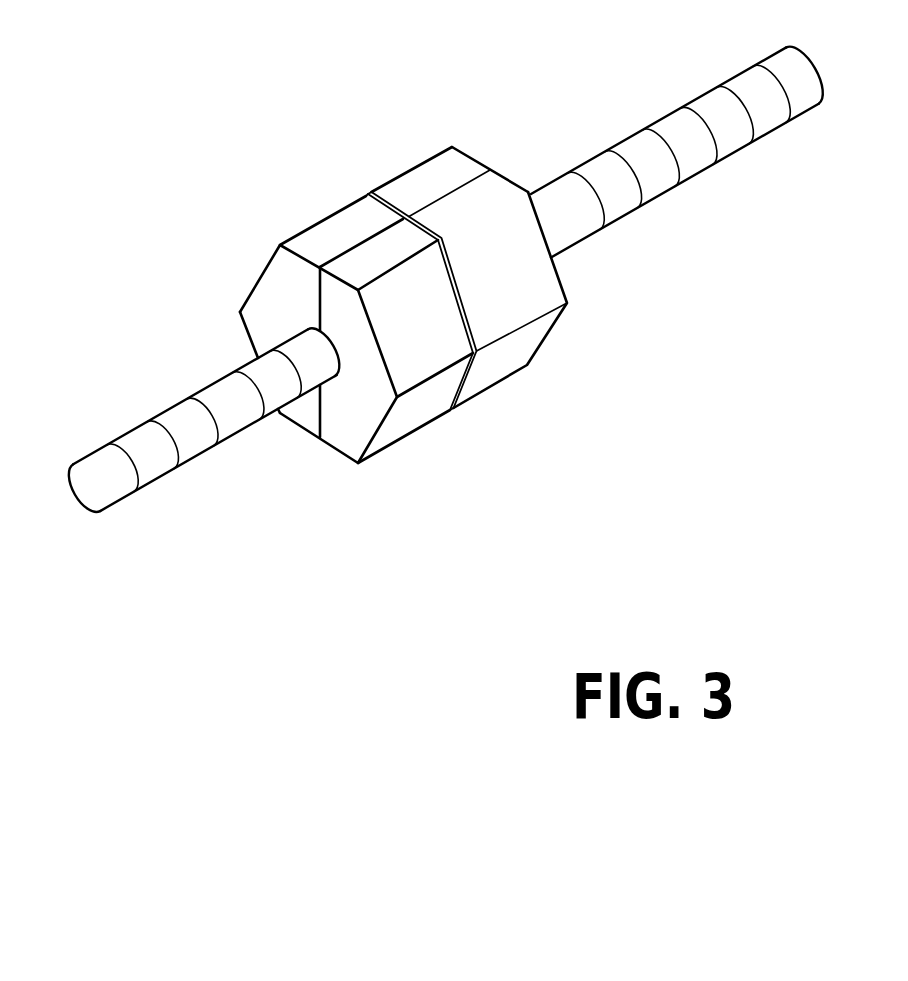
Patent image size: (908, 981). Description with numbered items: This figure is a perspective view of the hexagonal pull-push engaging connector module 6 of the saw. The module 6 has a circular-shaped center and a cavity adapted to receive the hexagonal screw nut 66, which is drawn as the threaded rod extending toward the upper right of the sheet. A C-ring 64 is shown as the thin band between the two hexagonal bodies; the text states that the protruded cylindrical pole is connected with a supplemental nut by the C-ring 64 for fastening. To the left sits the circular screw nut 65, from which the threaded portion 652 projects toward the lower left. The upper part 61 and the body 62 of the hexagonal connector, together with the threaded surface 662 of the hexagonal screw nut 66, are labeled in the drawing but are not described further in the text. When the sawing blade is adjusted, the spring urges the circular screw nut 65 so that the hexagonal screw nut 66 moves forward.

The hexagonal pull-push engaging connector module 6 is at (407, 562).
The top surface of nut body 61 is at (423, 183).
The nut body 62 is at (518, 233).
The C-ring 64 is at (395, 210).
The circular screw nut 65 is at (244, 462).
The threaded rod of nut 652 is at (193, 447).
The hexagonal screw nut 66 is at (704, 169).
The threads 662 is at (725, 145).